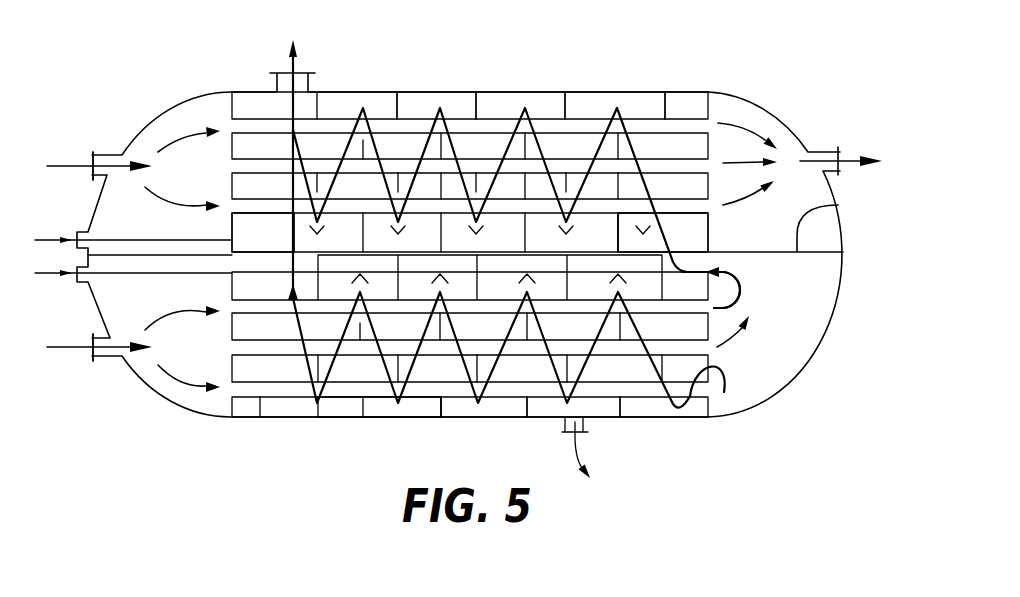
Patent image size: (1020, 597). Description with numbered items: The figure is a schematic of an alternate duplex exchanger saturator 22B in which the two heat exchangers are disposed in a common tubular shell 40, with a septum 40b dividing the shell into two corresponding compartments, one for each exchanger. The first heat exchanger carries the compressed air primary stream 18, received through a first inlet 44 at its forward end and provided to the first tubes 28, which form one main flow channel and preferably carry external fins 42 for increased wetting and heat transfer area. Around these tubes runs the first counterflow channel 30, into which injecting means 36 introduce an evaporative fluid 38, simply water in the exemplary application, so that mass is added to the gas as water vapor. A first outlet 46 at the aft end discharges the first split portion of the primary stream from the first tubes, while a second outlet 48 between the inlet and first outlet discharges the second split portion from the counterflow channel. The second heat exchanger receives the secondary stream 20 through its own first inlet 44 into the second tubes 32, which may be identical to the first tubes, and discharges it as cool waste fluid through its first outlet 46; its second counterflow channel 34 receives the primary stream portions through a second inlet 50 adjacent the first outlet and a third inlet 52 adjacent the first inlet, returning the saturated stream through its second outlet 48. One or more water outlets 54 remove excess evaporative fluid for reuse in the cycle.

The primary stream 18 is at (72, 350).
The secondary stream 20 is at (70, 163).
The duplex exchanger saturator 22B is at (740, 68).
The first tubes 28 is at (260, 417).
The first counterflow channel 30 is at (362, 410).
The second tubes 32 is at (458, 110).
The second counterflow channel 34 is at (477, 104).
The injecting means 36 is at (145, 238).
The evaporative fluid 38 is at (133, 254).
The tubular shell 40 is at (205, 95).
The septum 40b is at (838, 205).
The external fins 42 is at (664, 92).
The first inlet 44 is at (107, 152).
The first outlet 46 is at (691, 298).
The second outlet 48 is at (318, 80).
The second inlet 50 is at (699, 241).
The third inlet 52 is at (281, 241).
The water outlets 54 is at (592, 428).